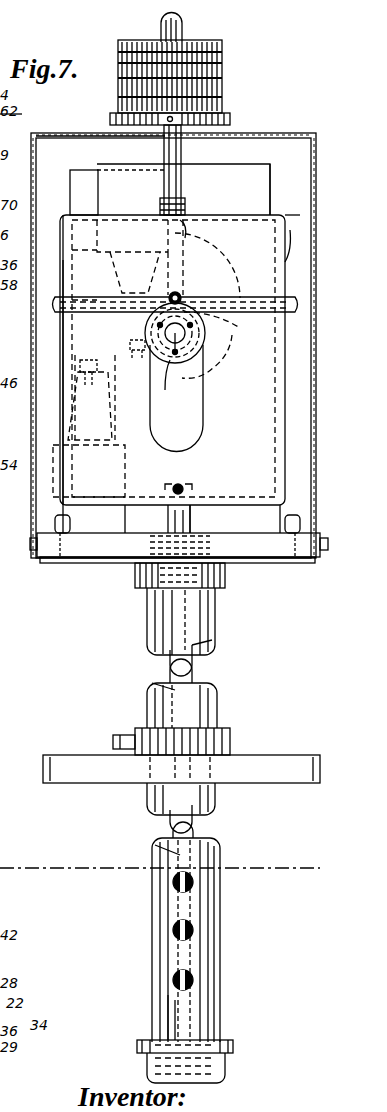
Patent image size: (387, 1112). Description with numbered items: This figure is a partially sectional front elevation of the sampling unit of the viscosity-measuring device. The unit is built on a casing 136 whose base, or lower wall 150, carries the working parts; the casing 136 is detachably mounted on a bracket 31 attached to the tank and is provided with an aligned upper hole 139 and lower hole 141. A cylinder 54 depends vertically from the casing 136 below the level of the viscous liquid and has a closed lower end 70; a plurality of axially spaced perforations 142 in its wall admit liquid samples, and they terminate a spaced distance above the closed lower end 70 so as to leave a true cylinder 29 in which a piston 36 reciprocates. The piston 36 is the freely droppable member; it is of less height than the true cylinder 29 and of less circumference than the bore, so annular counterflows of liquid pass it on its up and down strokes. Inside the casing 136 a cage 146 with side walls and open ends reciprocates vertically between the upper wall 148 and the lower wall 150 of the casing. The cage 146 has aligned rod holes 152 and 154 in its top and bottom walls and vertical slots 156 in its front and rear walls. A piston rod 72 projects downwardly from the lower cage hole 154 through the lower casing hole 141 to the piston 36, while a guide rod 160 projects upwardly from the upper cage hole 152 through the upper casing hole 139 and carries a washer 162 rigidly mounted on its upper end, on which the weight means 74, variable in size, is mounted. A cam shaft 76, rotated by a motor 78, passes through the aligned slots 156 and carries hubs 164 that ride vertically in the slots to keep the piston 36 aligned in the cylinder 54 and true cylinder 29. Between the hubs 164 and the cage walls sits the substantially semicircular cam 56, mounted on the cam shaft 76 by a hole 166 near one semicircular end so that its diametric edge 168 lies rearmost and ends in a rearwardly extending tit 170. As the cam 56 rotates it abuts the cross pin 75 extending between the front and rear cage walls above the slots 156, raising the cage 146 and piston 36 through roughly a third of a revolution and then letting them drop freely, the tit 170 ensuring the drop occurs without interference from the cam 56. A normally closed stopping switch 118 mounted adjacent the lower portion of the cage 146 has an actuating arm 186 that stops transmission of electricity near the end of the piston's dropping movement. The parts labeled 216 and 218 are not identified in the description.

The weight means 74 is at (225, 92).
The washer 162 is at (232, 118).
The guide rod 160 is at (183, 153).
The upper rod hole 152 is at (186, 200).
The casing 136 is at (314, 142).
The upper wall of casing 148 is at (83, 135).
The upper casing hole 139 is at (162, 137).
The cage 146 is at (295, 225).
The stopping switch 118 is at (60, 490).
The motor 78 is at (298, 300).
The cross pin 75 is at (181, 294).
The tit 170 is at (185, 225).
The cam 56 is at (222, 270).
The cam hole 166 is at (205, 350).
The diametric edge 168 is at (250, 330).
The hubs 164 is at (200, 372).
The contact 216 is at (130, 342).
The contact 218 is at (94, 365).
The vertical slots 156 is at (200, 400).
The cam shaft 76 is at (167, 384).
The actuating arm 186 is at (75, 400).
The lower rod hole 154 is at (192, 485).
The base 150 is at (258, 548).
The lower casing hole 141 is at (138, 588).
The piston rod 72 is at (195, 668).
The bracket 31 is at (265, 760).
The piston 36 is at (222, 1012).
The perforations 142 is at (193, 975).
The cylinder 54 is at (170, 1000).
The true cylinder 29 is at (170, 1030).
The closed lower end 70 is at (226, 1068).